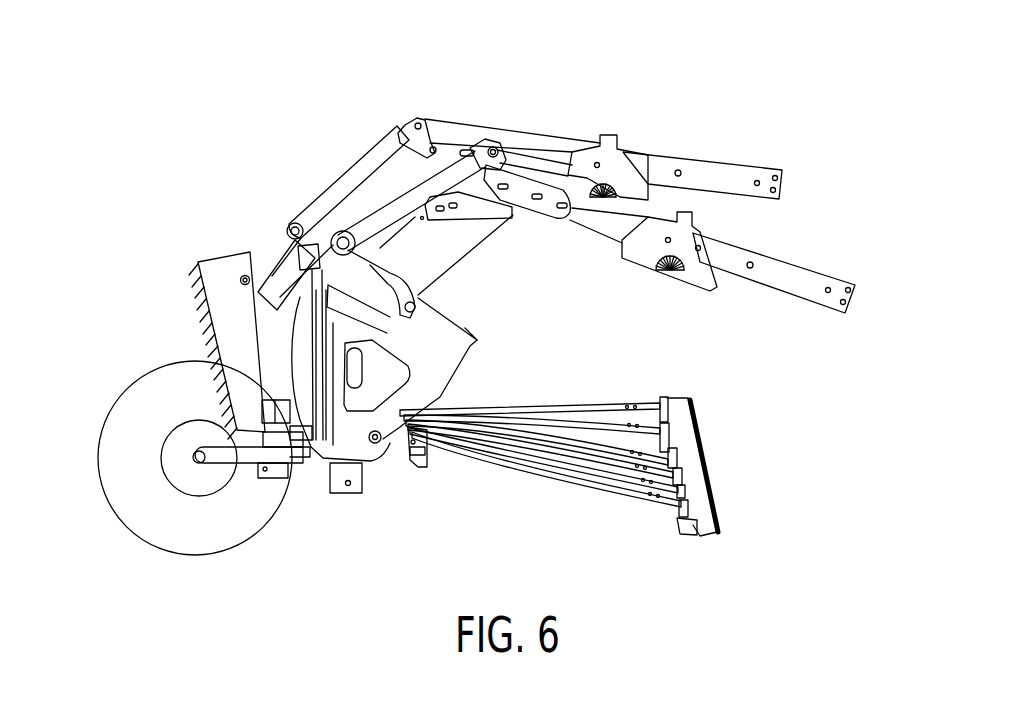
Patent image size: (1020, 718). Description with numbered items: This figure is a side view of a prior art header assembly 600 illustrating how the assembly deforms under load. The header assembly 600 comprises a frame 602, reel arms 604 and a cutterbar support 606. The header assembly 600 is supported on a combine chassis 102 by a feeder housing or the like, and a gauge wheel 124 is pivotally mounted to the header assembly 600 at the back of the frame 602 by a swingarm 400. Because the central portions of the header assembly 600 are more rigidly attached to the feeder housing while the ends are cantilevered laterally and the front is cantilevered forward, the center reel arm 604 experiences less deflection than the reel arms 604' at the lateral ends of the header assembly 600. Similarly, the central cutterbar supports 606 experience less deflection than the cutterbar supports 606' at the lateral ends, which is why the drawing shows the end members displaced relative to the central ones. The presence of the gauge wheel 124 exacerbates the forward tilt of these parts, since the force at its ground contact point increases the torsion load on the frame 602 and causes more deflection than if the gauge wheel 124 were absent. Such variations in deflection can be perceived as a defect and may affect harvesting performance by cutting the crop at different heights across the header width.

The header assembly 600 is at (380, 91).
The combine chassis 102 is at (200, 283).
The gauge wheel 124 is at (132, 388).
The swingarm 400 is at (252, 458).
The frame 602 is at (355, 468).
The reel arm 604 is at (675, 146).
The reel arm 604' is at (738, 258).
The cutterbar support 606 is at (559, 437).
The cutterbar support 606' is at (548, 500).